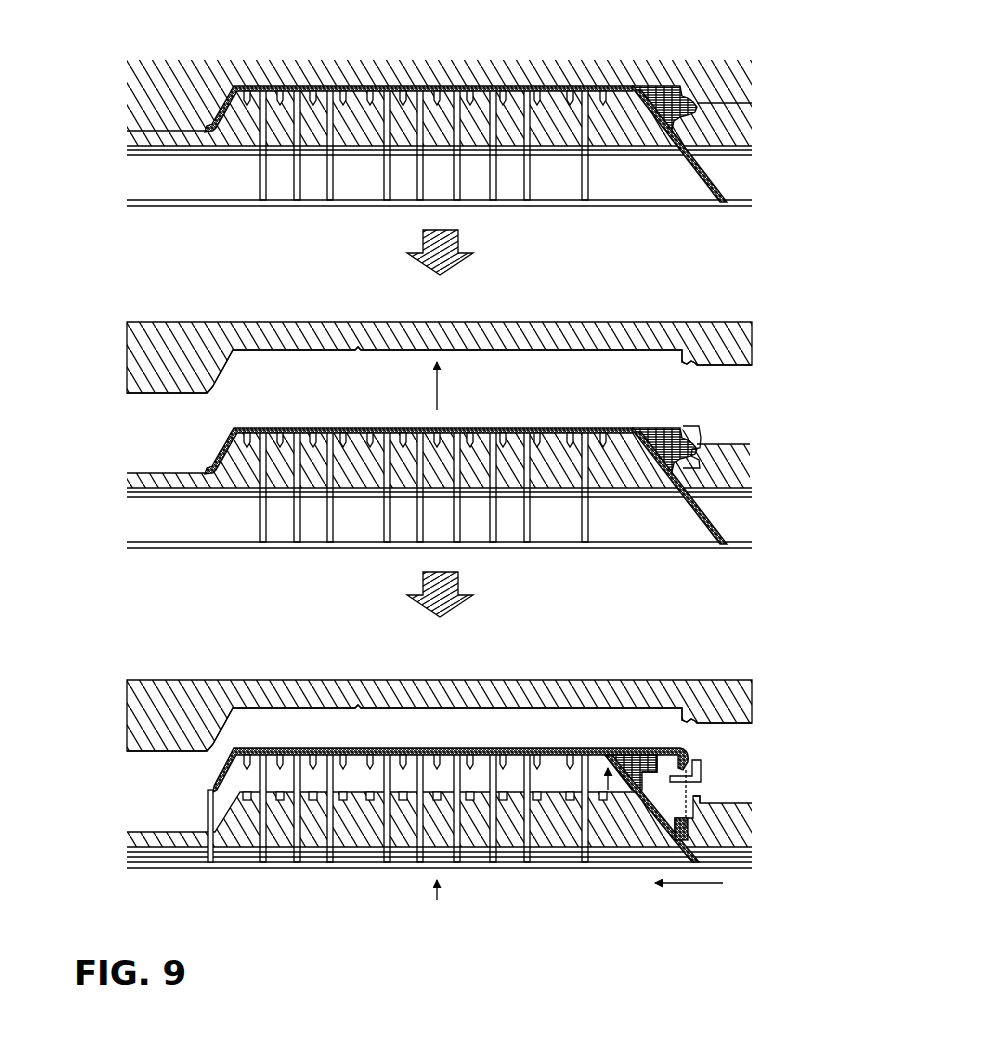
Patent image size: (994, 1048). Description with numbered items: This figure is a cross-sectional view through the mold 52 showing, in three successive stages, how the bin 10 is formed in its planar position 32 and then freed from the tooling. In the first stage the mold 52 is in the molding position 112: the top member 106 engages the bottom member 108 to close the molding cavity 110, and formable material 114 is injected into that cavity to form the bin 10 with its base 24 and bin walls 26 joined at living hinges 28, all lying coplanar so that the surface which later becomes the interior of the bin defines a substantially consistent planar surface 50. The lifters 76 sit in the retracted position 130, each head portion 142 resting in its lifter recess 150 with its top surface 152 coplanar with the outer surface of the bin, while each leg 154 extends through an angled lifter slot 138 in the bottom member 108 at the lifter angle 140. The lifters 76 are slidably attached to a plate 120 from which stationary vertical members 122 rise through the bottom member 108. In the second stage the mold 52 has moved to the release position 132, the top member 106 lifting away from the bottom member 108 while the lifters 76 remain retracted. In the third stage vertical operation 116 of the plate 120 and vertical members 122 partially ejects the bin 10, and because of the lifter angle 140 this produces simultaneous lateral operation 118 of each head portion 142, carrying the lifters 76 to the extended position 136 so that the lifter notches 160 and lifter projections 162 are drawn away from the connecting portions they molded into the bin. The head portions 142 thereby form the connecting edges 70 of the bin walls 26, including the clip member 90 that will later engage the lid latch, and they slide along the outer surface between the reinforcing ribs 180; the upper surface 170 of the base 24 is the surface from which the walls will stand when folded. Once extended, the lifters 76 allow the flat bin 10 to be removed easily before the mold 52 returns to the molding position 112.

The bin 10 is at (406, 434).
The base 24 is at (406, 434).
The bin walls 26 is at (406, 434).
The living hinges 28 is at (406, 434).
The planar position 32 is at (406, 474).
The planar surface 50 is at (406, 474).
The mold 52 is at (439, 394).
The connecting edges 70 is at (207, 800).
The lifters 76 is at (715, 167).
The clip member 90 is at (698, 438).
The top member 106 is at (745, 76).
The bottom member 108 is at (735, 125).
The molding cavity 110 is at (406, 434).
The molding position 112 is at (439, 388).
The formable material 114 is at (406, 434).
The vertical operation 116 is at (440, 385).
The lateral operation 118 is at (680, 886).
The plate 120 is at (185, 210).
The stationary vertical members 122 is at (342, 190).
The retracted position 130 is at (677, 163).
The release position 132 is at (439, 394).
The extended position 136 is at (680, 755).
The lifter slot 138 is at (655, 100).
The lifter angle 140 is at (680, 196).
The head portion 142 is at (651, 396).
The lifter recess 150 is at (698, 798).
The top surface 152 is at (647, 432).
The leg 154 is at (725, 183).
The lifter notches 160 is at (665, 760).
The lifter projections 162 is at (697, 763).
The upper surface 170 is at (406, 474).
The reinforcing ribs 180 is at (406, 474).